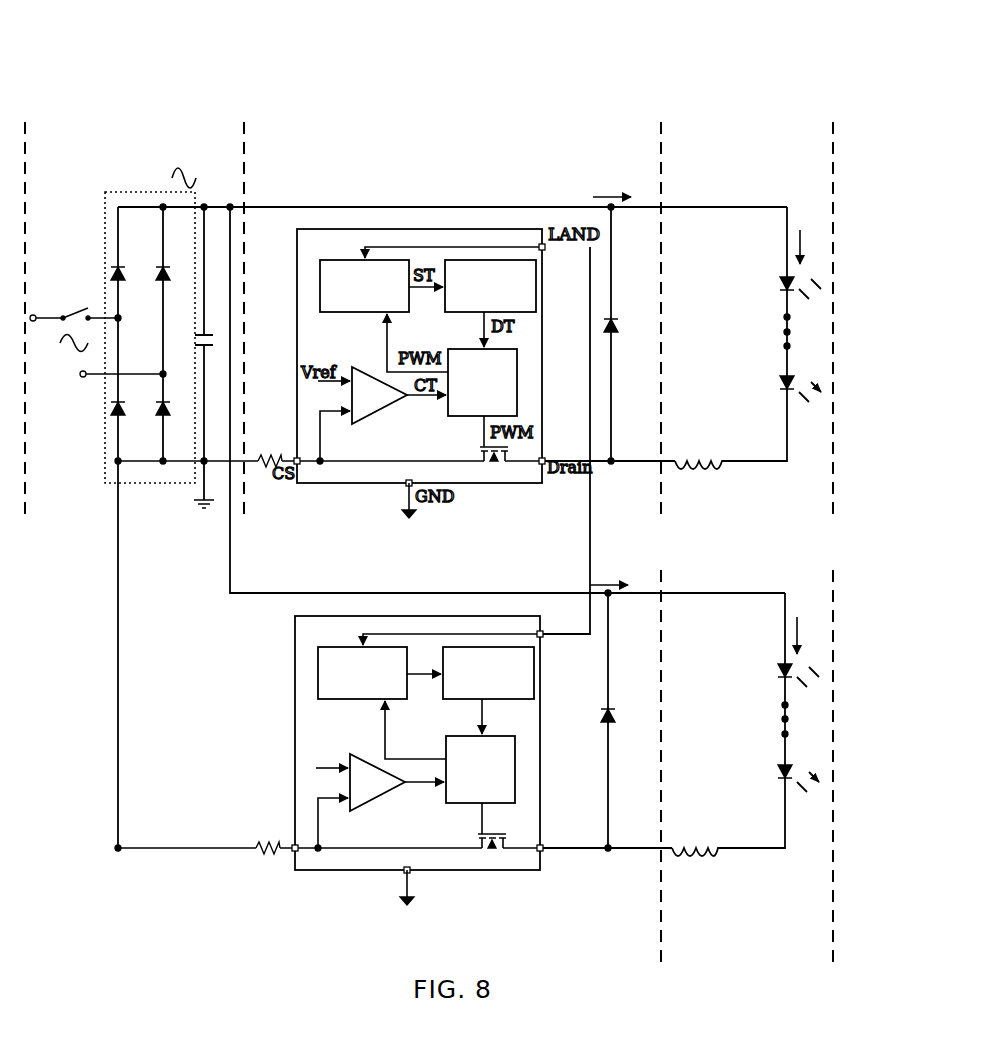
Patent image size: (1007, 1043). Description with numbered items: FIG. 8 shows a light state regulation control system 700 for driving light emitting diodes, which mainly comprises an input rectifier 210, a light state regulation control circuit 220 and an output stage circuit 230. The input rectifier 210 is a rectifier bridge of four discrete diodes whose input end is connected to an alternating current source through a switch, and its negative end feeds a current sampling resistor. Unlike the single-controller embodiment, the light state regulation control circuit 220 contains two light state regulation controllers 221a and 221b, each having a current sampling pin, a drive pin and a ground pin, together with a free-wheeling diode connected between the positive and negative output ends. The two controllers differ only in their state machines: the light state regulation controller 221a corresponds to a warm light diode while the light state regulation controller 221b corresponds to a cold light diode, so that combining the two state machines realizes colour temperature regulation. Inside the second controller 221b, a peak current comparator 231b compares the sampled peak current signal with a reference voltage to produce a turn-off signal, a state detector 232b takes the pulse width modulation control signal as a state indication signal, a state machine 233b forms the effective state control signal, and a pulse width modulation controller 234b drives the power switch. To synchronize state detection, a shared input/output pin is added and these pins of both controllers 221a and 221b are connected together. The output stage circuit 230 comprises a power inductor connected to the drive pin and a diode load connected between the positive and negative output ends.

The light state regulation control system 700 is at (429, 490).
The input rectifier 210 is at (163, 496).
The light state regulation control circuit 220 is at (545, 494).
The output stage circuit 230 is at (752, 497).
The light state regulation controller 221a is at (462, 229).
The light state regulation controller 221b is at (445, 617).
The peak current comparator 231b is at (372, 834).
The state detector 232b is at (362, 630).
The state machine 233b is at (549, 670).
The PWM controller 234b is at (516, 769).